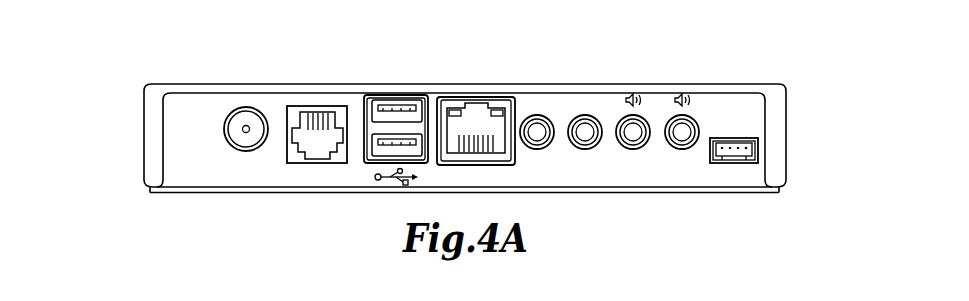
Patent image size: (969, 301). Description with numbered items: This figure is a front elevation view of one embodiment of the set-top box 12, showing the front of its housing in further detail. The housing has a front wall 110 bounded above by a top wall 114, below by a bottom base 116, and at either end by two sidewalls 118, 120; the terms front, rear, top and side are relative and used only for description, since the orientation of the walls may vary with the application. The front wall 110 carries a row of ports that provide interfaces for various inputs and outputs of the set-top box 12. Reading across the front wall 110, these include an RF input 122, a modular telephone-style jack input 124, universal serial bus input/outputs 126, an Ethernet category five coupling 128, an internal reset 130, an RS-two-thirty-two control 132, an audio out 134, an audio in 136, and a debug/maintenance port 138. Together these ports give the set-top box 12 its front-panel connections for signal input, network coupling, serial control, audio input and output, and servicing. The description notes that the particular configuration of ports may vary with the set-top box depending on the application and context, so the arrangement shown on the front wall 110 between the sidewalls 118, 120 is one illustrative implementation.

The set-top box 12 is at (190, 78).
The front wall 110 is at (647, 182).
The top wall 114 is at (746, 84).
The bottom base 116 is at (700, 192).
The sidewall 118 is at (144, 140).
The sidewall 120 is at (787, 136).
The RF input 122 is at (248, 107).
The RJ-45 input 124 is at (318, 105).
The universal serial bus (USB) input/outputs 126 is at (397, 100).
The Ethernet category 5 (Cat 5) coupling 128 is at (476, 100).
The internal reset 130 is at (537, 115).
The RS232 control 132 is at (587, 115).
The audio out 134 is at (637, 115).
The audio in 136 is at (686, 115).
The debug/maintenance port 138 is at (735, 165).